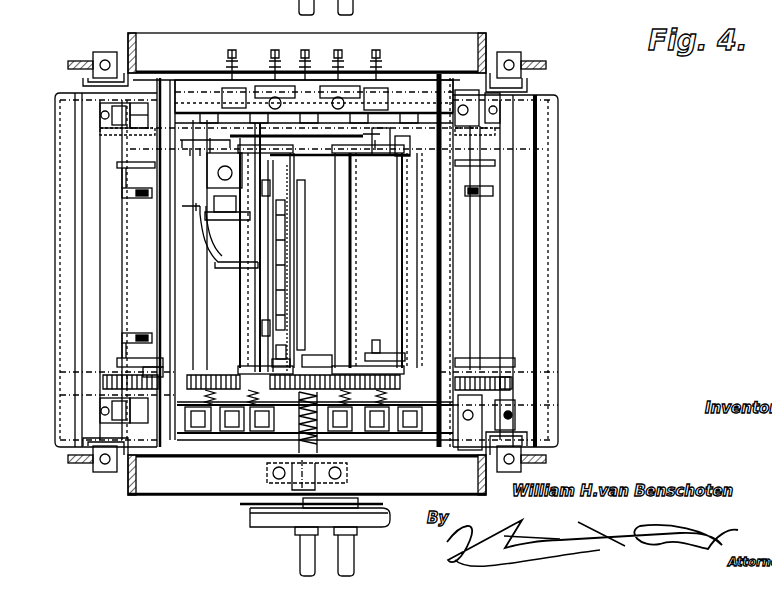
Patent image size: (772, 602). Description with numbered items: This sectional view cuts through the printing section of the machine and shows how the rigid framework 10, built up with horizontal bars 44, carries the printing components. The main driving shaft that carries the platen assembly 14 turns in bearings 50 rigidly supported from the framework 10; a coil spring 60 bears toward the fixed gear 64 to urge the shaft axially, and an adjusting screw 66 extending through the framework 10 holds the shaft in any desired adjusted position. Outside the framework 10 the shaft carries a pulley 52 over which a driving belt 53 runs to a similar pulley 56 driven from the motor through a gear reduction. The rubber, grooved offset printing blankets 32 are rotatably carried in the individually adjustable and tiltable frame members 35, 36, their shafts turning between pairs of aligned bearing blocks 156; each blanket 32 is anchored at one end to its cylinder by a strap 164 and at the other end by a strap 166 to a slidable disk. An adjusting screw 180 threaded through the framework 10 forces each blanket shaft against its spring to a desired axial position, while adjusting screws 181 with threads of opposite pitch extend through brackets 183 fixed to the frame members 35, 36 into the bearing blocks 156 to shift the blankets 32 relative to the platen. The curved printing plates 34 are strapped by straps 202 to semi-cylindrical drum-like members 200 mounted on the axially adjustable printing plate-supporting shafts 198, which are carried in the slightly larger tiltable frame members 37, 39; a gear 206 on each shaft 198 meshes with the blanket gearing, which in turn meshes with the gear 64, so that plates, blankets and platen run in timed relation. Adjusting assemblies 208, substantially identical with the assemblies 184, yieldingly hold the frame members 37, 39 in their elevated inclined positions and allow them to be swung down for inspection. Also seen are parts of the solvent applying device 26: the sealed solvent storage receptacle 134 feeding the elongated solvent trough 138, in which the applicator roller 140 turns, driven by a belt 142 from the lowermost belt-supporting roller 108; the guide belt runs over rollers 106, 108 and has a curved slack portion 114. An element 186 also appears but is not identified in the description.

The framework 10 is at (141, 26).
The horizontal bars 44 is at (205, 46).
The adjusting screw 66 is at (326, 15).
The adjusting screw 180 is at (262, 50).
The adjusting assemblies 208 is at (68, 65).
The adjusting screws 181 is at (101, 115).
The brackets 183 is at (130, 121).
The adjusting assemblies 184 is at (148, 128).
The printing plate-supporting shafts 198 is at (152, 157).
The straps 202 is at (122, 193).
The frame member 39 is at (68, 253).
The frame member 37 is at (565, 335).
The drum-like members 200 is at (122, 279).
The curved printing plates 34 is at (110, 304).
The frame member 36 is at (164, 259).
The frame member 35 is at (452, 275).
The offset printing blankets 32 is at (213, 307).
The tube 186 is at (220, 243).
The solvent storage receptacle 134 is at (237, 172).
The roller 108 is at (262, 183).
The strap 166 is at (390, 155).
The curved slack portion 114 is at (282, 238).
The roller 106 is at (276, 250).
The solvent applying device 26 is at (297, 265).
The solvent trough 138 is at (288, 278).
The applicator roller 140 is at (290, 292).
The platen assembly 14 is at (342, 333).
The belt 142 is at (288, 345).
The fixed gear 64 is at (321, 357).
The strap 164 is at (377, 345).
The gear 206 is at (512, 383).
The bearing blocks 156 is at (306, 413).
The coil spring 60 is at (321, 422).
The bearings 50 is at (266, 472).
The pulley 52 is at (252, 510).
The driving belt 53 is at (252, 521).
The pulley 56 is at (346, 551).